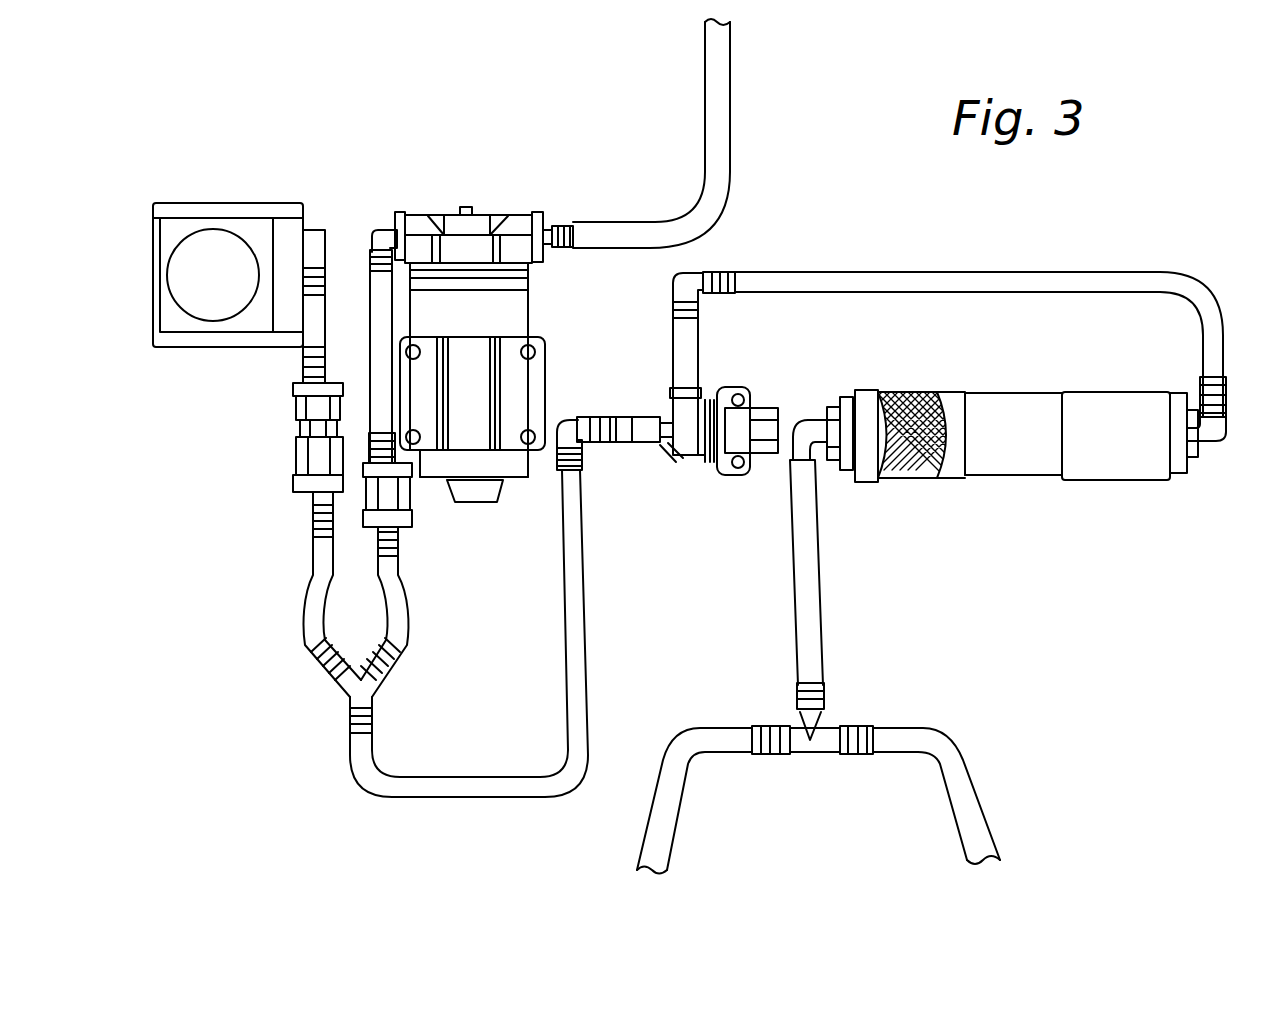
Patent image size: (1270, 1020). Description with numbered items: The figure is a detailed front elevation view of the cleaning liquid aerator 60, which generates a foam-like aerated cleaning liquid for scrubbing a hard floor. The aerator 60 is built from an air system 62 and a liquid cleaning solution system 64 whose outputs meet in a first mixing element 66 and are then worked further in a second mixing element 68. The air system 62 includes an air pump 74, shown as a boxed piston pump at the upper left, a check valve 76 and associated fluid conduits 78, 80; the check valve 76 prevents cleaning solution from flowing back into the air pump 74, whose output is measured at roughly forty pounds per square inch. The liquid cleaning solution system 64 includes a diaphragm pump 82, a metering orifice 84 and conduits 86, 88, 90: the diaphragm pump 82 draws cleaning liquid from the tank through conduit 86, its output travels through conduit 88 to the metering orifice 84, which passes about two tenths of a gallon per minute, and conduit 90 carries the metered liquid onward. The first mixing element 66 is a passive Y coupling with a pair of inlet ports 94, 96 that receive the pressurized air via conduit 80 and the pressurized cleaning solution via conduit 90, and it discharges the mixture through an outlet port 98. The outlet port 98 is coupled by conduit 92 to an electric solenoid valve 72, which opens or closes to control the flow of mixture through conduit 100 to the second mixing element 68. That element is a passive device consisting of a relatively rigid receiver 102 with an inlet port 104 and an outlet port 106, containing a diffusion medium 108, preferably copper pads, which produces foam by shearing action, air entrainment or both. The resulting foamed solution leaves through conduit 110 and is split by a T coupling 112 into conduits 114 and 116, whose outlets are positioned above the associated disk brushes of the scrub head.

The cleaning liquid aerator 60 is at (376, 100).
The air system 62 is at (207, 182).
The liquid cleaning solution system 64 is at (497, 184).
The first mixing element 66 is at (376, 698).
The second mixing element 68 is at (1036, 357).
The electric solenoid valve 72 is at (720, 404).
The air pump 74 is at (234, 206).
The check valve 76 is at (294, 412).
The fluid conduit 78 is at (305, 357).
The fluid conduit 80 is at (314, 533).
The diaphragm pump 82 is at (510, 218).
The metering orifice 84 is at (412, 506).
The fluid conduit 86 is at (703, 177).
The fluid conduit 88 is at (374, 320).
The fluid conduit 90 is at (406, 602).
The conduit 92 is at (432, 777).
The inlet port 94 is at (332, 686).
The inlet port 96 is at (404, 673).
The outlet port 98 is at (372, 728).
The conduit 100 is at (745, 300).
The receiver 102 is at (1077, 392).
The inlet port 104 is at (1195, 440).
The outlet port 106 is at (811, 424).
The diffusion medium 108 is at (895, 394).
The conduit 110 is at (820, 553).
The T coupling 112 is at (829, 718).
The conduit 114 is at (700, 727).
The conduit 116 is at (922, 729).